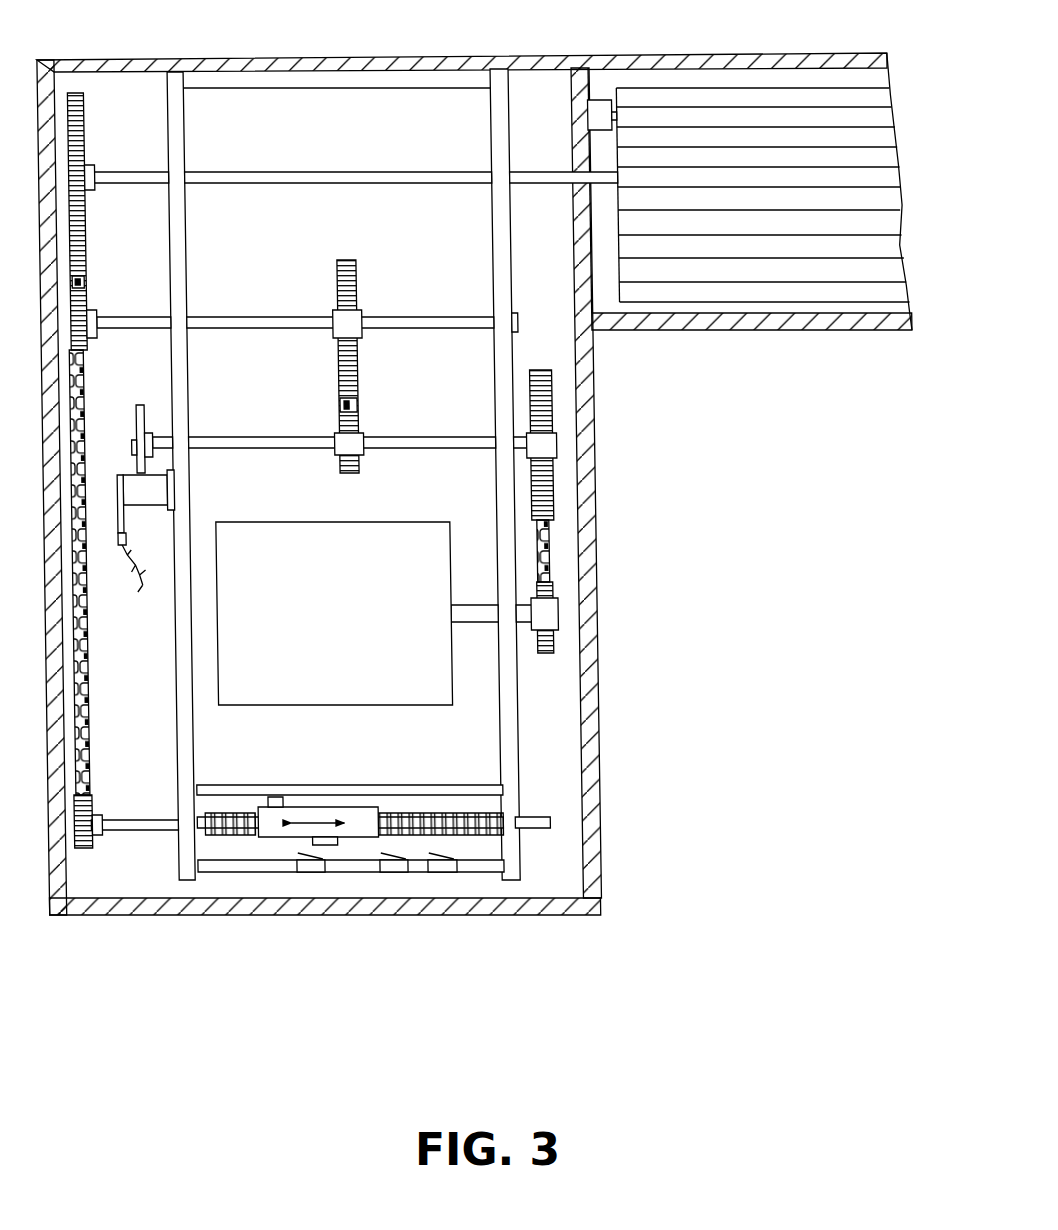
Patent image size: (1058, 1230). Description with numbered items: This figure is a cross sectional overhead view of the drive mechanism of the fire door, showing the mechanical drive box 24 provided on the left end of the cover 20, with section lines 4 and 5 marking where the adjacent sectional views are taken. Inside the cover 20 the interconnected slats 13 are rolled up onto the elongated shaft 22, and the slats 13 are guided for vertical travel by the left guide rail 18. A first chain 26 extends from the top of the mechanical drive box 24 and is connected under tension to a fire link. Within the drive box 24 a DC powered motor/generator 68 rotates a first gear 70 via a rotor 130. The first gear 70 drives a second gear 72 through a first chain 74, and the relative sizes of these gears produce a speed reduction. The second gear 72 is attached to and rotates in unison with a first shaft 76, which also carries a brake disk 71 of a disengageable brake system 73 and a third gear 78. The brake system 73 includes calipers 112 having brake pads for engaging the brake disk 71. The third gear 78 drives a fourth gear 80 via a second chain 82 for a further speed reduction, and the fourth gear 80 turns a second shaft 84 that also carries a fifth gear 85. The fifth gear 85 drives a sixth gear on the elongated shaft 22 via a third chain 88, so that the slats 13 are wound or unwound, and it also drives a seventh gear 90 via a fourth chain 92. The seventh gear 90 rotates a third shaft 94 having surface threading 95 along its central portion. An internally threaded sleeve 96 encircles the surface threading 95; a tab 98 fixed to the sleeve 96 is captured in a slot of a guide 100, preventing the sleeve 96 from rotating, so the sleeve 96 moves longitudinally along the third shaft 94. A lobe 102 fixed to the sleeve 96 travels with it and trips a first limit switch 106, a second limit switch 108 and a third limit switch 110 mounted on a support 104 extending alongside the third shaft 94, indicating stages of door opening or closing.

The section line 4- 4 is at (56, 78).
The section line 5- 5 is at (551, 78).
The interconnected slats 13 is at (755, 227).
The left guide rail 18 is at (597, 108).
The cover 20 is at (780, 325).
The elongated shaft 22 is at (335, 172).
The mechanical drive box 24 is at (585, 478).
The first chain 26 is at (131, 592).
The motor/generator 68 is at (350, 630).
The first gear 70 is at (540, 635).
The brake disk 71 is at (130, 412).
The second gear 72 is at (543, 420).
The brake system 73 is at (100, 538).
The first chain 74 is at (538, 548).
The first shaft 76 is at (432, 440).
The third gear 78 is at (354, 436).
The fourth gear 80 is at (352, 262).
The second chain 82 is at (354, 405).
The second shaft 84 is at (245, 318).
The fifth gear 85 is at (86, 340).
The third chain 88 is at (82, 282).
The seventh gear 90 is at (80, 805).
The fourth chain 92 is at (78, 685).
The third shaft 94 is at (125, 832).
The surface threading 95 is at (420, 813).
The sleeve 96 is at (80, 128).
The tab 98 is at (268, 800).
The guide 100 is at (200, 785).
The lobe 102 is at (320, 843).
The support 104 is at (228, 868).
The first limit switch 106 is at (310, 874).
The second limit switch 108 is at (390, 872).
The third limit switch 110 is at (435, 872).
The calipers 112 is at (115, 480).
The rotor 130 is at (470, 610).